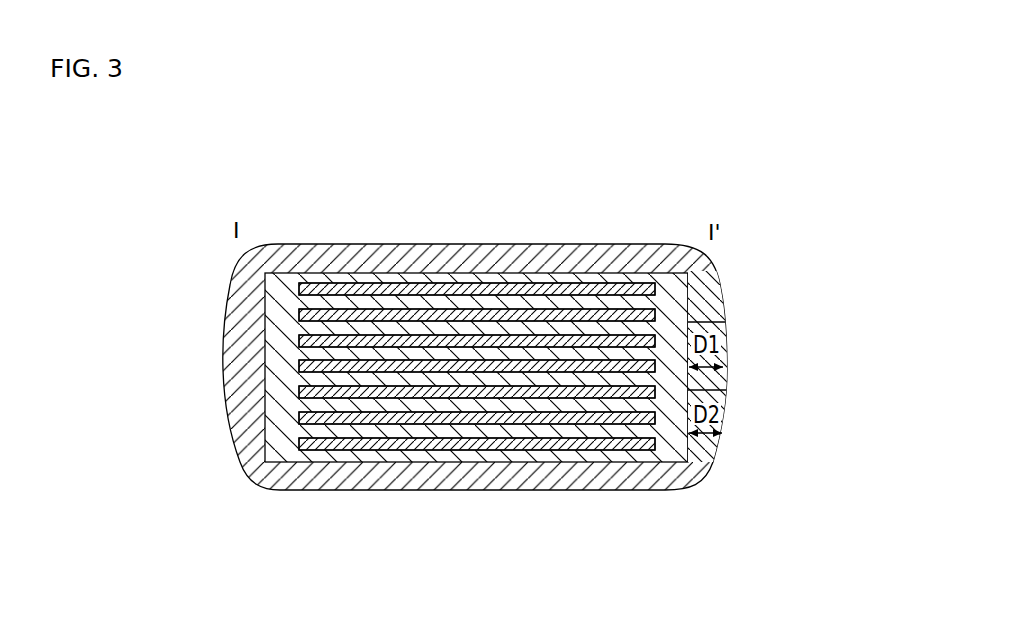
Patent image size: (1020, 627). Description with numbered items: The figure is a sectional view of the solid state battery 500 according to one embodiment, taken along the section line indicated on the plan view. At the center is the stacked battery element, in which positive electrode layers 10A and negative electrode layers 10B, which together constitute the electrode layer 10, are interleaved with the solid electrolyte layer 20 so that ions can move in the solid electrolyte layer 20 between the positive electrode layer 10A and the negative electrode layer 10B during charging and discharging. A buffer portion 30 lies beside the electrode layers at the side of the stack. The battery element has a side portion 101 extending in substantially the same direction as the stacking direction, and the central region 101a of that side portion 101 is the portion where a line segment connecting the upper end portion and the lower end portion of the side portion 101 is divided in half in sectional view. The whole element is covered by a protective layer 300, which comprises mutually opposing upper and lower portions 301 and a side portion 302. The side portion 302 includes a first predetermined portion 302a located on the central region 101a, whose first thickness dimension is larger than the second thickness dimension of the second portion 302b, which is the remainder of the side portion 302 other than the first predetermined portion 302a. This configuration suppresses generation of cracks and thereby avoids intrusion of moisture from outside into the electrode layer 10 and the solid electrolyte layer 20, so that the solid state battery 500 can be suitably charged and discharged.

The solid state battery 500 is at (762, 221).
The side portion of battery element 101 is at (723, 398).
The central region of side portion of battery element 101a is at (655, 347).
The electrode layer 10 is at (477, 433).
The positive electrode layer 10A is at (557, 346).
The negative electrode layer 10B is at (334, 346).
The solid electrolyte layer 20 is at (470, 277).
The buffer portion 30 is at (284, 290).
The protective layer 300 is at (790, 364).
The upper portion/lower portion of protective layer 301 is at (688, 254).
The side portion of protective layer 302 is at (769, 398).
The first predetermined portion of side portion of protective layer 302a is at (725, 353).
The second portion of side portion of protective layer 302b is at (727, 413).